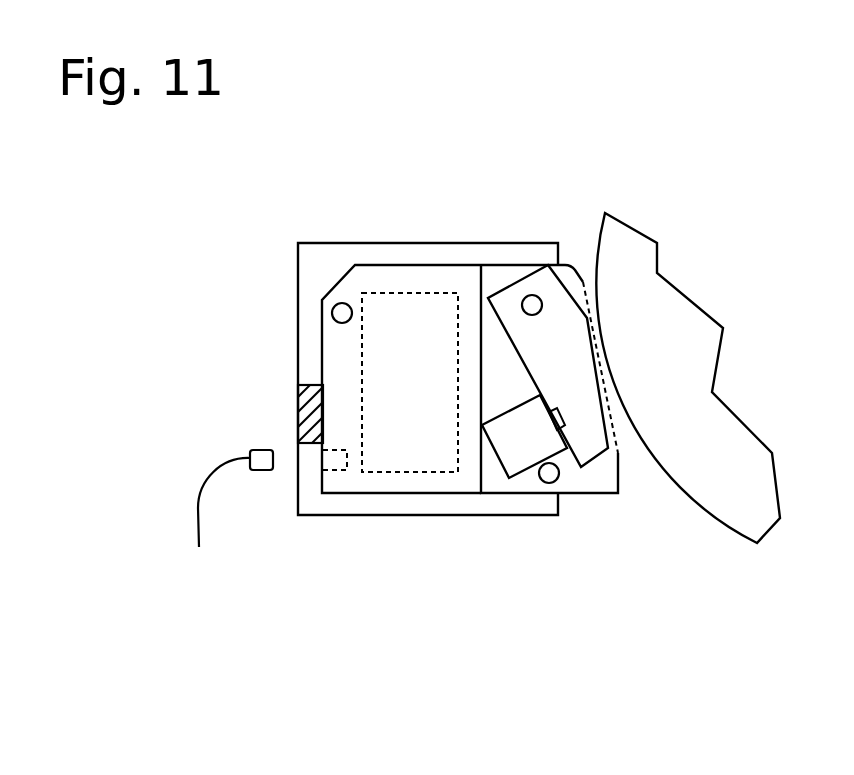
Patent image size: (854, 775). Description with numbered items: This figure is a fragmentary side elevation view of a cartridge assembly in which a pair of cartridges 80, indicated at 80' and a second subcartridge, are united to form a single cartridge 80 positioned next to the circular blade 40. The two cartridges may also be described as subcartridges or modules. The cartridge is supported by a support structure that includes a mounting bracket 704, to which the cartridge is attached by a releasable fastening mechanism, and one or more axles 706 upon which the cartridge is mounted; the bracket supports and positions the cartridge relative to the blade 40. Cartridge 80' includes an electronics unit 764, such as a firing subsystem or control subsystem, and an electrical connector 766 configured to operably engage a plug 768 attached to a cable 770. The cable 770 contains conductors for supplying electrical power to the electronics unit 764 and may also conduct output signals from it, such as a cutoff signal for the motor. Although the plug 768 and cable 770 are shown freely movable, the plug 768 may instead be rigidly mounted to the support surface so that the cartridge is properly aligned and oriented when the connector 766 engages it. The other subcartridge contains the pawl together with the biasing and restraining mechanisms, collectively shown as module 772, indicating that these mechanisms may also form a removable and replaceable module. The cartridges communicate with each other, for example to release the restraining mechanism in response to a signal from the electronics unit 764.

The circular blade 40 is at (685, 365).
The cartridge 80 is at (470, 322).
The cartridge 80' is at (401, 339).
The mounting bracket 704 is at (298, 408).
The axle 706 is at (333, 312).
The electronics unit 764 is at (360, 378).
The electrical connector 766 is at (337, 470).
The plug 768 is at (250, 452).
The cable 770 is at (197, 505).
The module 772 is at (507, 473).